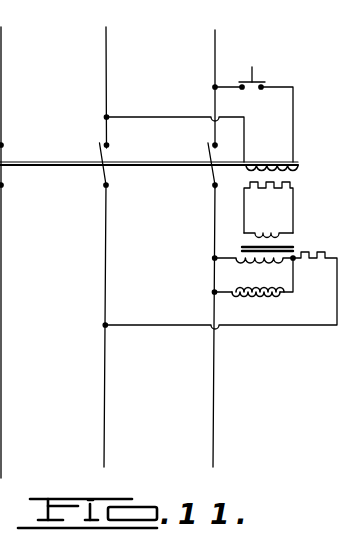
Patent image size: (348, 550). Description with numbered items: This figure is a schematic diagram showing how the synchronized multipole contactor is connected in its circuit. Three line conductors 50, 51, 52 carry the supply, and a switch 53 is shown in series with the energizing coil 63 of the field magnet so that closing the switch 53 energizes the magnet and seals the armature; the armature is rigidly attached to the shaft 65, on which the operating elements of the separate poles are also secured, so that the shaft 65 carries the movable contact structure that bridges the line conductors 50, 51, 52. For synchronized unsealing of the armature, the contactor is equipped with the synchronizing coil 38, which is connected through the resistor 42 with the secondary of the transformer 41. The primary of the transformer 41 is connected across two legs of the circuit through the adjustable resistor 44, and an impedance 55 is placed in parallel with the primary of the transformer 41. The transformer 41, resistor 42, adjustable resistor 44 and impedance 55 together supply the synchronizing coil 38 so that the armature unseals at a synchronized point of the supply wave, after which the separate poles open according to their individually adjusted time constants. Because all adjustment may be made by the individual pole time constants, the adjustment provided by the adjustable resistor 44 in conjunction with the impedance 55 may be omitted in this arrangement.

The supply line conductor 50 is at (2, 50).
The supply line conductor 51 is at (107, 48).
The supply line conductor 52 is at (214, 46).
The switch 53 is at (262, 82).
The energizing coil 63 is at (269, 158).
The shaft 65 is at (143, 165).
The synchronizing coil 38 is at (247, 182).
The resistor 42 is at (257, 186).
The transformer 41 is at (298, 247).
The adjustable resistor 44 is at (321, 262).
The impedance 55 is at (258, 297).